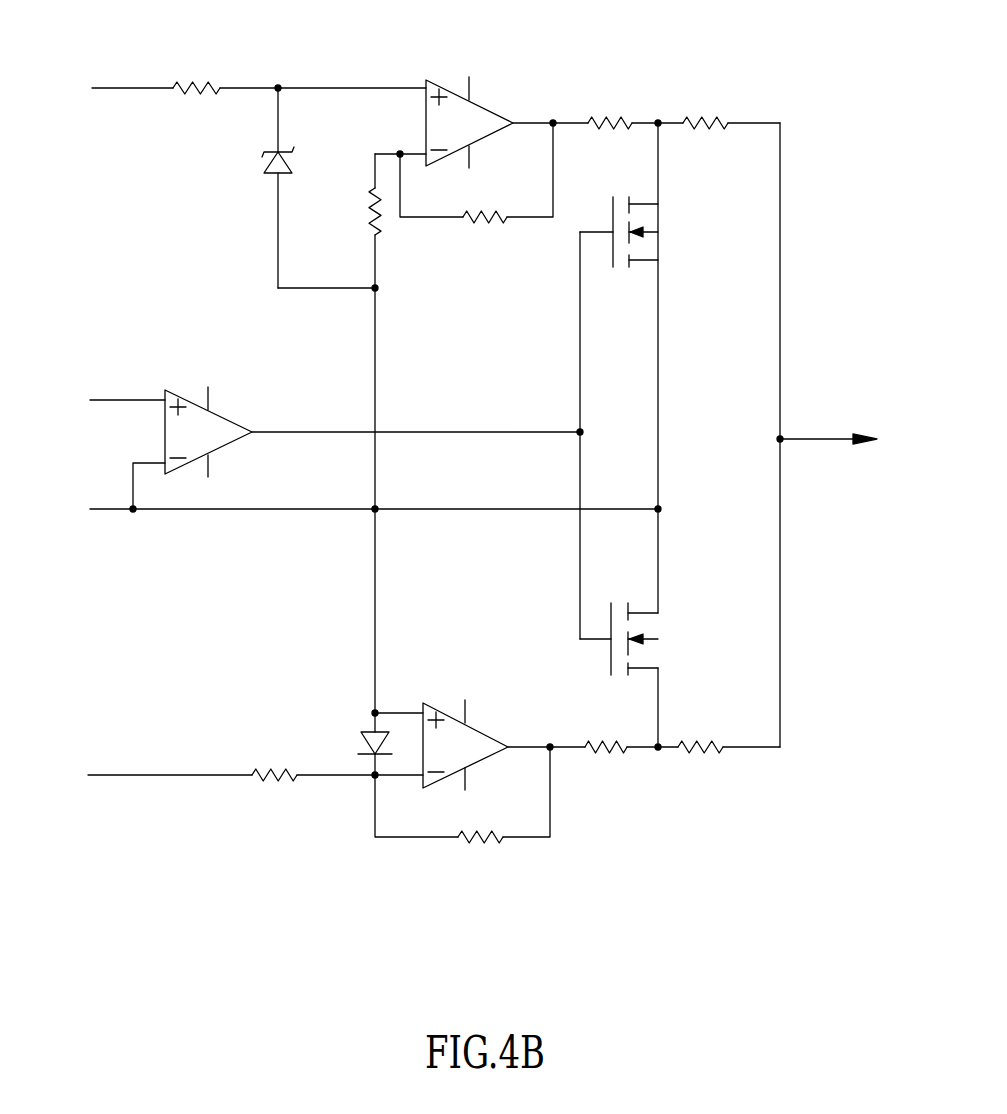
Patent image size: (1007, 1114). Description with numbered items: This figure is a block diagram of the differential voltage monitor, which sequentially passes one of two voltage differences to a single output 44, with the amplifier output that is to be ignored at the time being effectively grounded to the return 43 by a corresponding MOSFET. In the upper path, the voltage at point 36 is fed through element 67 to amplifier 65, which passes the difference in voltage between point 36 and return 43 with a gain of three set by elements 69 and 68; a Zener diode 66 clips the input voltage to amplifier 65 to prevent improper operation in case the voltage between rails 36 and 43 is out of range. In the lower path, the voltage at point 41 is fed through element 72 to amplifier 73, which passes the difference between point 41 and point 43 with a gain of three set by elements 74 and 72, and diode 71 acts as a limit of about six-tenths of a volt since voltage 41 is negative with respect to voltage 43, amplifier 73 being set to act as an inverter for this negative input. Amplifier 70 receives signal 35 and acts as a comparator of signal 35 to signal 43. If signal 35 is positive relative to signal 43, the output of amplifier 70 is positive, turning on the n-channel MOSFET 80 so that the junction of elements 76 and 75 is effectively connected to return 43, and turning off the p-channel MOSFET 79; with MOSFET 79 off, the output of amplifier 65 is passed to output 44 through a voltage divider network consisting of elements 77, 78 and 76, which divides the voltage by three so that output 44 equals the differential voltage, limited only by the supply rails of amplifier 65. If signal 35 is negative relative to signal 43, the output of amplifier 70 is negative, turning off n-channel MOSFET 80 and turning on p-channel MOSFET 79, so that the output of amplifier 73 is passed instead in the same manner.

The point 36 is at (118, 86).
The element 67 is at (190, 85).
The Zener diode 66 is at (260, 166).
The amplifier 65 is at (488, 108).
The element 68 is at (370, 210).
The element 69 is at (485, 212).
The element 77 is at (604, 122).
The element 78 is at (701, 122).
The p-channel MOSFET 79 is at (648, 234).
The amplifier 70 is at (225, 418).
The signal 35 is at (118, 399).
The return 43 is at (110, 508).
The output 44 is at (823, 437).
The n-channel MOSFET 80 is at (645, 643).
The diode 71 is at (355, 745).
The point 41 is at (122, 772).
The element 72 is at (278, 771).
The amplifier 73 is at (487, 728).
The element 74 is at (478, 834).
The element 75 is at (595, 745).
The element 76 is at (690, 745).